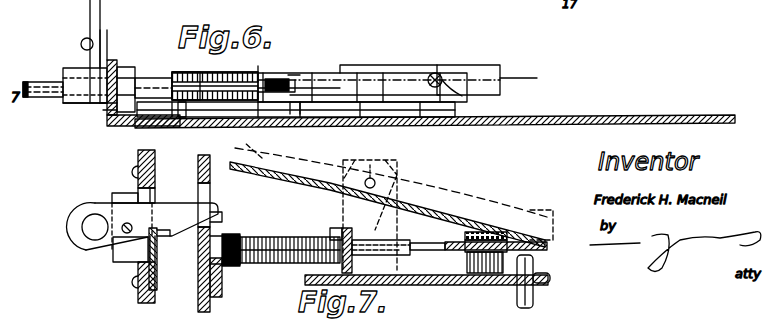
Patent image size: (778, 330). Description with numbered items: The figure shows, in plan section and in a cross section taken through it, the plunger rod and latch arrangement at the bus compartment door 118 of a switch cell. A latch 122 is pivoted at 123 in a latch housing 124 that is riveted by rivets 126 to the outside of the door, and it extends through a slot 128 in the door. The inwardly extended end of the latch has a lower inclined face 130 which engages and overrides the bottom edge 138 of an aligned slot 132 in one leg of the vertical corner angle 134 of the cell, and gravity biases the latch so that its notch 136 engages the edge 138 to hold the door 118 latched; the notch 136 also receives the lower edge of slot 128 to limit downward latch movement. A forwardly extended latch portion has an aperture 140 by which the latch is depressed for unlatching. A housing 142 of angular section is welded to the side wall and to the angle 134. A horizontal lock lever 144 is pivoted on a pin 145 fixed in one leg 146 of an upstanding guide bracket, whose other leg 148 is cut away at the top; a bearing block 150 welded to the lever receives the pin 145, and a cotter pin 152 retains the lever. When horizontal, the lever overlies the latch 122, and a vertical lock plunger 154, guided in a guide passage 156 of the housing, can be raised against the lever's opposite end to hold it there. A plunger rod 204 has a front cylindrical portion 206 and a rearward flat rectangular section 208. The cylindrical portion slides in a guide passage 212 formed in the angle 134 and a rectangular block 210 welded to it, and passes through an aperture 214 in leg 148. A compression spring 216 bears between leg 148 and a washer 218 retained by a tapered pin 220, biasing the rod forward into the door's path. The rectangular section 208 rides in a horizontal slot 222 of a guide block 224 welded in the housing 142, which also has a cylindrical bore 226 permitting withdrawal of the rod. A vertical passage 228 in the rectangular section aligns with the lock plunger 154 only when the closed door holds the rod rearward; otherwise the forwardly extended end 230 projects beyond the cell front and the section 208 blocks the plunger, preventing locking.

In FIG. 6, the door 118 is at (103, 10).
In FIG. 7, the door 118 is at (153, 305).
In FIG. 6, the latch 122 is at (40, 81).
In FIG. 7, the latch 122 is at (127, 210).
In FIG. 6, the pivot 123 is at (72, 105).
In FIG. 7, the pivot 123 is at (112, 250).
In FIG. 6, the latch housing 124 is at (68, 68).
In FIG. 7, the latch housing 124 is at (133, 283).
In FIG. 6, the rivets 126 is at (85, 38).
In FIG. 7, the rivets 126 is at (136, 168).
In FIG. 6, the slot 128 is at (108, 45).
In FIG. 7, the slot 128 is at (152, 200).
In FIG. 7, the lower inclined face 130 is at (215, 218).
In FIG. 6, the slot 132 is at (110, 110).
In FIG. 7, the slot 132 is at (207, 194).
In FIG. 6, the vertical corner angle 134 is at (110, 122).
In FIG. 7, the vertical corner angle 134 is at (200, 297).
In FIG. 7, the notch 136 is at (156, 232).
In FIG. 7, the bottom edge 138 is at (242, 238).
In FIG. 7, the aperture 140 is at (82, 228).
In FIG. 6, the housing 142 is at (320, 113).
In FIG. 6, the lock lever 144 is at (383, 68).
In FIG. 7, the lock lever 144 is at (427, 203).
In FIG. 6, the pin 145 is at (283, 78).
In FIG. 7, the pin 145 is at (358, 162).
In FIG. 6, the leg of guide bracket 146 is at (295, 110).
In FIG. 7, the leg of guide bracket 146 is at (397, 160).
In FIG. 7, the leg of guide bracket 148 is at (340, 230).
In FIG. 6, the bearing block 150 is at (263, 80).
In FIG. 7, the bearing block 150 is at (342, 177).
In FIG. 6, the cotter pin 152 is at (292, 80).
In FIG. 6, the lock plunger 154 is at (435, 73).
In FIG. 7, the lock plunger 154 is at (533, 297).
In FIG. 7, the guide passage 156 is at (552, 278).
In FIG. 7, the plunger rod 204 is at (364, 240).
In FIG. 6, the front cylindrical portion 206 is at (133, 73).
In FIG. 7, the front cylindrical portion 206 is at (384, 241).
In FIG. 6, the flat rectangular section 208 is at (478, 66).
In FIG. 7, the flat rectangular section 208 is at (545, 240).
In FIG. 6, the rectangular block 210 is at (143, 78).
In FIG. 7, the rectangular block 210 is at (217, 298).
In FIG. 6, the guide passage 212 is at (127, 59).
In FIG. 7, the guide passage 212 is at (222, 236).
In FIG. 6, the aperture 214 is at (248, 72).
In FIG. 7, the aperture 214 is at (343, 230).
In FIG. 6, the compression spring 216 is at (224, 98).
In FIG. 7, the compression spring 216 is at (332, 240).
In FIG. 6, the washer 218 is at (187, 68).
In FIG. 7, the washer 218 is at (235, 262).
In FIG. 6, the tapered pin 220 is at (172, 90).
In FIG. 7, the tapered pin 220 is at (232, 282).
In FIG. 7, the horizontal slot 222 is at (482, 232).
In FIG. 6, the guide block 224 is at (393, 105).
In FIG. 7, the guide block 224 is at (368, 158).
In FIG. 7, the cylindrical bore 226 is at (495, 232).
In FIG. 6, the vertical passage 228 is at (462, 95).
In FIG. 7, the vertical passage 228 is at (466, 257).
In FIG. 7, the forwardly extended end 230 is at (157, 263).